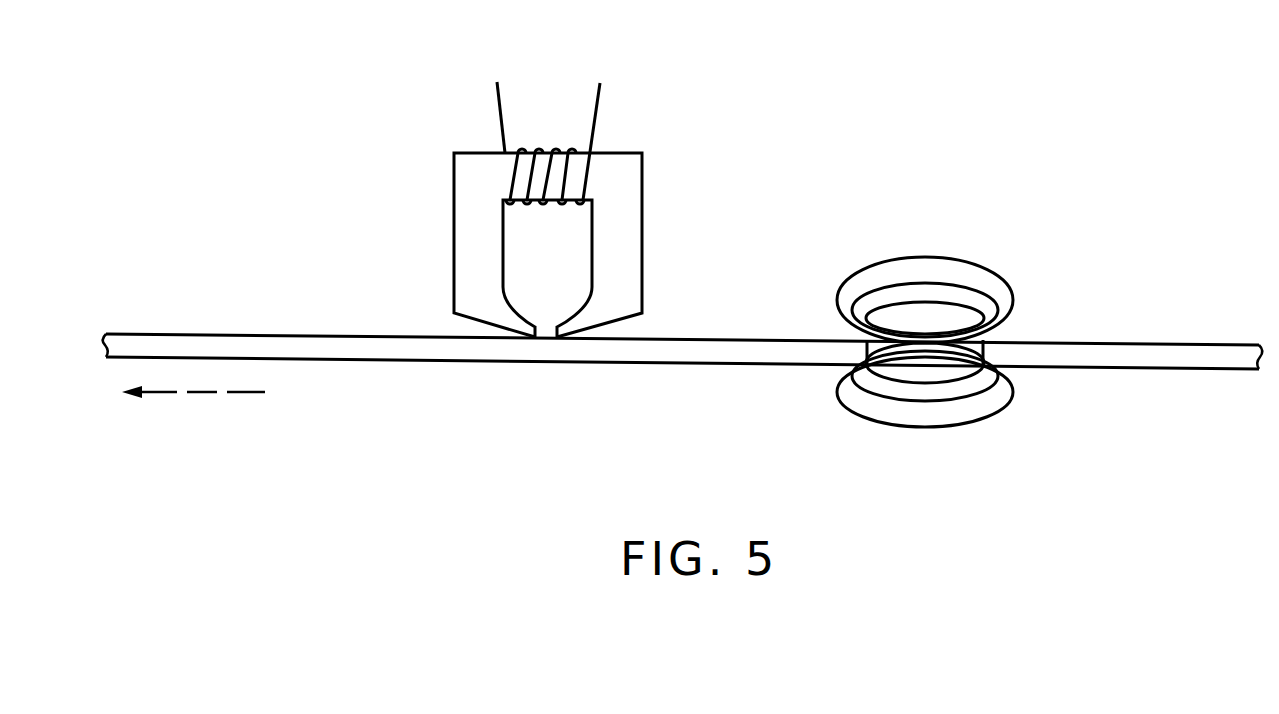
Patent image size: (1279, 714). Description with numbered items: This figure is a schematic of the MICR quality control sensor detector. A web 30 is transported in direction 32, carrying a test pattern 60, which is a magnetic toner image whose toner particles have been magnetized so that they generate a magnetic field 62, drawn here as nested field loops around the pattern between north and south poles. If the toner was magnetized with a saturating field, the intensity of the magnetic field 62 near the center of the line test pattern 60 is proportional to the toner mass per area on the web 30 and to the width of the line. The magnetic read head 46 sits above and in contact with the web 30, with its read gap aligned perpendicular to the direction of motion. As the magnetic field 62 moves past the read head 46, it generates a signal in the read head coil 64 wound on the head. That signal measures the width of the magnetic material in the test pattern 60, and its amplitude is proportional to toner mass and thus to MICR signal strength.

The web 30 is at (1184, 388).
The direction 32 is at (168, 397).
The magnetic read head 46 is at (643, 235).
The test pattern 60 is at (953, 320).
The magnetic field 62 is at (925, 256).
The read head coil 64 is at (482, 84).